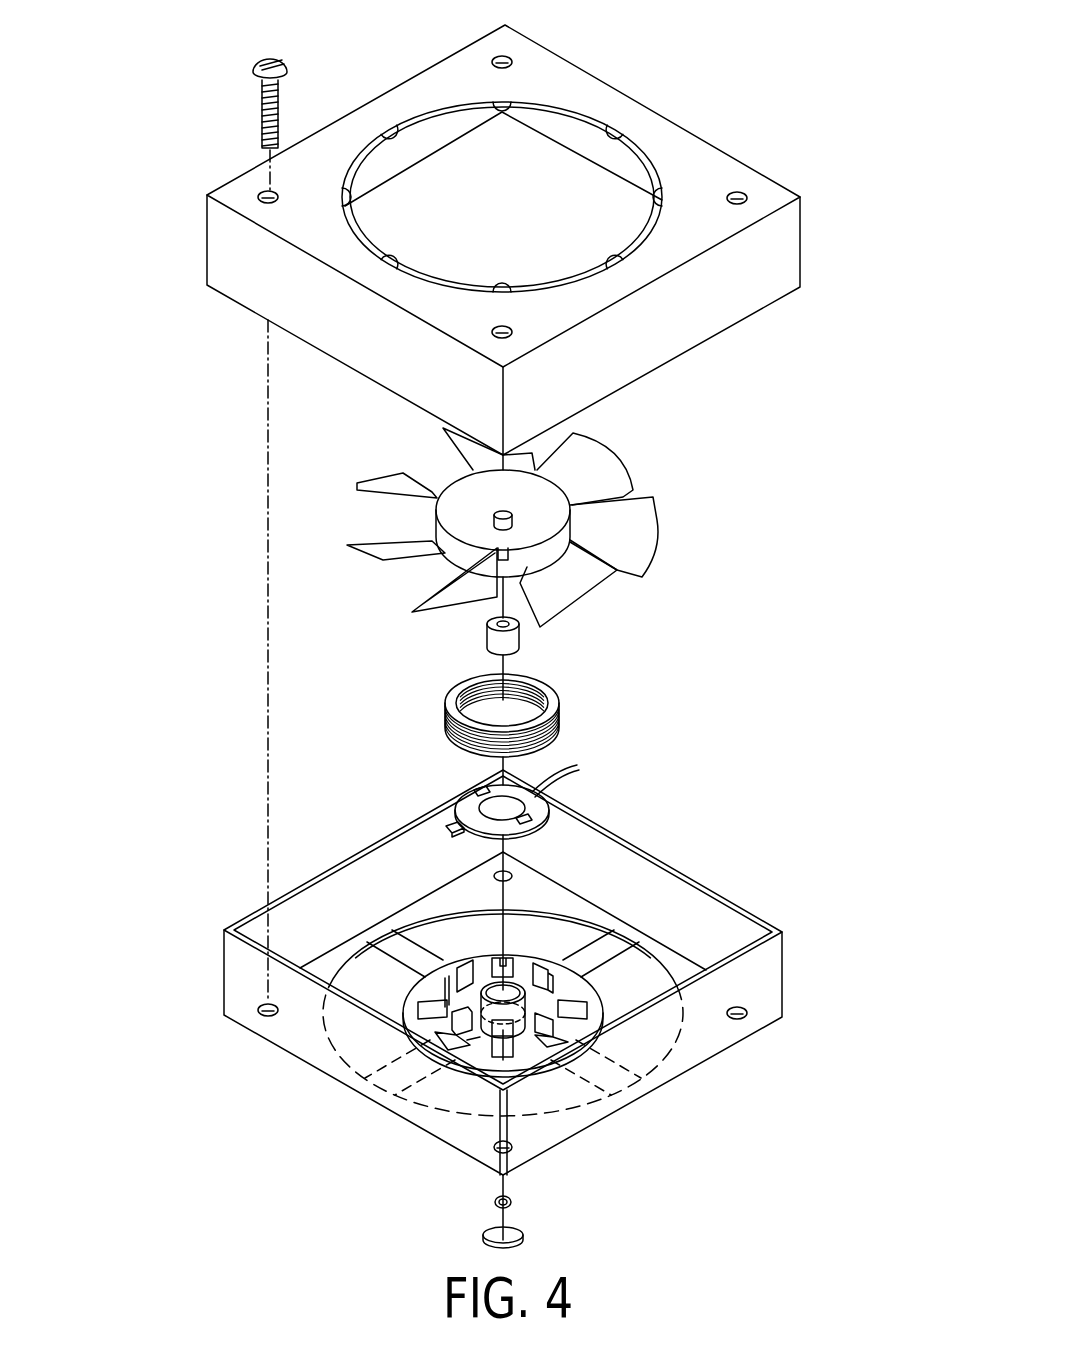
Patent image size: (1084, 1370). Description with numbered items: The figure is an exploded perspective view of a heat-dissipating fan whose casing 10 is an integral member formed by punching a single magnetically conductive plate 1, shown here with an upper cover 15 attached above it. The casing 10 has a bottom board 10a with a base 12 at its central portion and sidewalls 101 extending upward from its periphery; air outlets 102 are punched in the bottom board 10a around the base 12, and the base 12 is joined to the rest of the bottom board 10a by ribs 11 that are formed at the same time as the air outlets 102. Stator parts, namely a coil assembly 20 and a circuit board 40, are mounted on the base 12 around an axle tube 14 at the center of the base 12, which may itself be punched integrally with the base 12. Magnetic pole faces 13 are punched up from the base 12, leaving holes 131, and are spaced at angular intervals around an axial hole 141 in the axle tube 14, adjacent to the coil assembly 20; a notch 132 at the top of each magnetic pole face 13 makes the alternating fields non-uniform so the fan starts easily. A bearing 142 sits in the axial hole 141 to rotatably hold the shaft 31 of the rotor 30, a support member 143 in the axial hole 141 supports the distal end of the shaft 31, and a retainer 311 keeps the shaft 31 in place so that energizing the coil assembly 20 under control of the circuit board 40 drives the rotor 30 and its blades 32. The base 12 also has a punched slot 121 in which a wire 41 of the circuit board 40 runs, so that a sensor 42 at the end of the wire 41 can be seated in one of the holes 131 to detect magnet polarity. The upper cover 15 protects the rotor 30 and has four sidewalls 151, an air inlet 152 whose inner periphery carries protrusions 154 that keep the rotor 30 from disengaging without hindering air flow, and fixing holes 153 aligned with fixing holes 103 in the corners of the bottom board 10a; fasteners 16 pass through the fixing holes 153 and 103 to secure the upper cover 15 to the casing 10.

The magnetically conductive plate 1 is at (582, 912).
The casing 10 is at (462, 984).
The bottom board 10a is at (688, 970).
The sidewalls 101 is at (360, 878).
The air outlets 102 is at (372, 993).
The fixing holes 103 is at (255, 1003).
The ribs 11 is at (623, 947).
The base 12 is at (553, 1077).
The slot 121 is at (475, 1040).
The magnetic pole faces 13 is at (553, 1067).
The holes 131 is at (445, 1040).
The notch 132 is at (575, 1030).
The axle tube 14 is at (559, 1078).
The axial hole 141 is at (554, 1109).
The bearing 142 is at (485, 630).
The support member 143 is at (496, 1237).
The upper cover 15 is at (499, 227).
The sidewalls 151 is at (765, 246).
The air inlet 152 is at (582, 210).
The fixing holes 153 is at (266, 202).
The protrusions 154 is at (614, 131).
The fasteners 16 is at (262, 97).
The coil assembly 20 is at (548, 686).
The rotor 30 is at (553, 524).
The shaft 31 is at (495, 519).
The retainer 311 is at (512, 1202).
The blades 32 is at (597, 462).
The circuit board 40 is at (509, 788).
The wire 41 is at (453, 825).
The sensor 42 is at (457, 823).